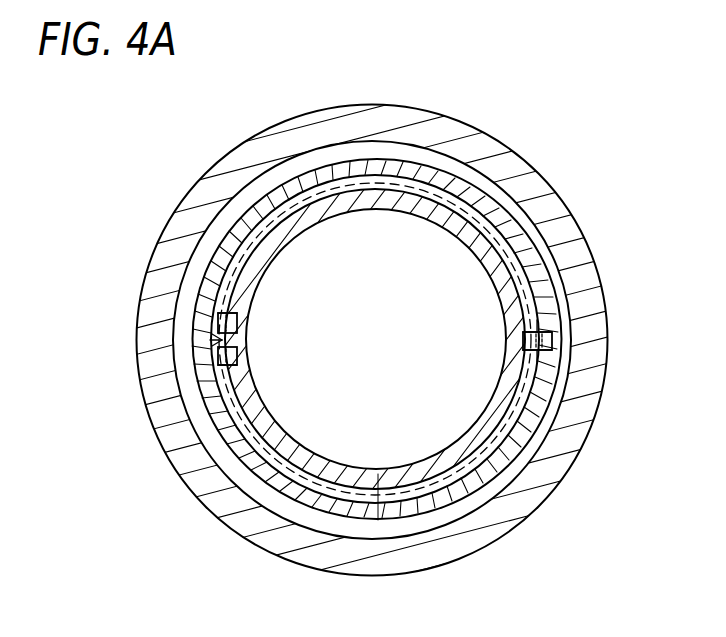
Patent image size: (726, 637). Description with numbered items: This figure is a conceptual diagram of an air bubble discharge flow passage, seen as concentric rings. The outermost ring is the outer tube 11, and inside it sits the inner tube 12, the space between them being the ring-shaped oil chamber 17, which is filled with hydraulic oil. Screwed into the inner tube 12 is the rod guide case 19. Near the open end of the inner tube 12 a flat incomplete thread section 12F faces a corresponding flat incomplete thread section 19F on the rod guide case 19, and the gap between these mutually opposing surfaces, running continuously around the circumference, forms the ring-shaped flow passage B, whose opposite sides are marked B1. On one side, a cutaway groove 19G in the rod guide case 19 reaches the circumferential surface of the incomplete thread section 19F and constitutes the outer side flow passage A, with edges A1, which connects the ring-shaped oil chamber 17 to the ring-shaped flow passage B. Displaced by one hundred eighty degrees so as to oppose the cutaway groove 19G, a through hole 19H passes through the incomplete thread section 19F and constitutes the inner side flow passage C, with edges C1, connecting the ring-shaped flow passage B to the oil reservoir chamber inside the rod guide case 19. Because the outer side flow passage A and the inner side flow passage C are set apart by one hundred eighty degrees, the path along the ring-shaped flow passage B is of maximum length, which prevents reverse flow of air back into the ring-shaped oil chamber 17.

The outer tube 11 is at (555, 218).
The inner tube 12 is at (478, 186).
The incomplete thread section 12F is at (533, 294).
The ring-shaped oil chamber 17 is at (566, 380).
The rod guide case 19 is at (405, 188).
The incomplete thread section 19F is at (512, 265).
The cutaway groove 19G is at (552, 337).
The through hole 19H is at (223, 339).
The outer side flow passage A is at (608, 336).
The slit edge A1 is at (532, 320).
The ring-shaped flow passage B is at (533, 420).
The portion B boundary B1 is at (388, 479).
The inner side flow passage C is at (288, 339).
The slit edge C1 is at (244, 318).